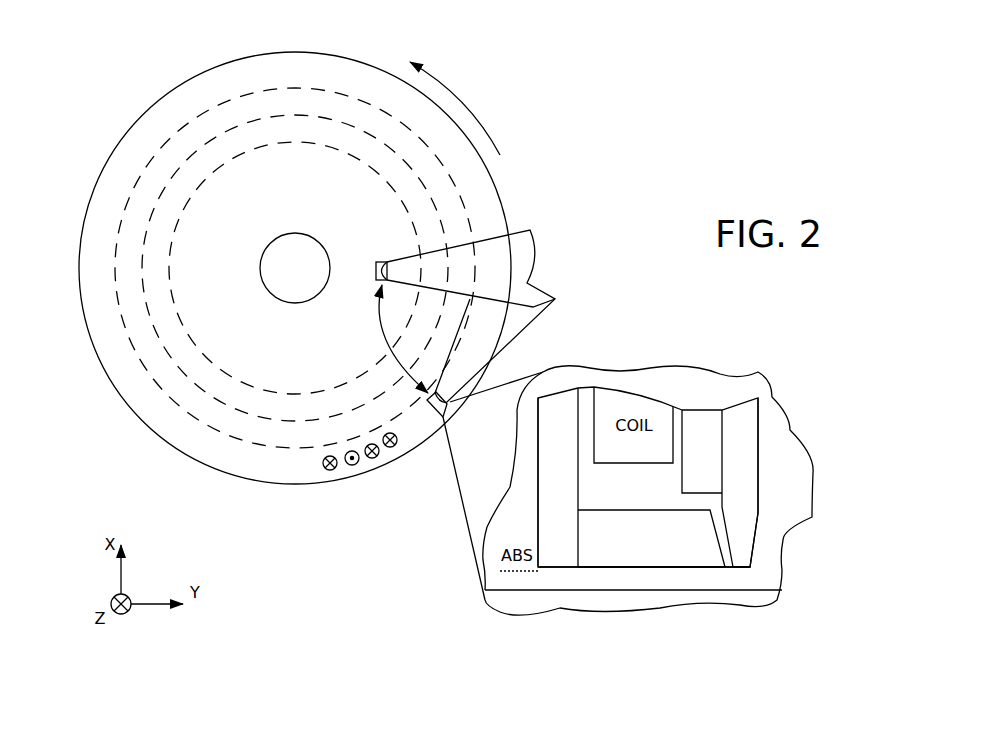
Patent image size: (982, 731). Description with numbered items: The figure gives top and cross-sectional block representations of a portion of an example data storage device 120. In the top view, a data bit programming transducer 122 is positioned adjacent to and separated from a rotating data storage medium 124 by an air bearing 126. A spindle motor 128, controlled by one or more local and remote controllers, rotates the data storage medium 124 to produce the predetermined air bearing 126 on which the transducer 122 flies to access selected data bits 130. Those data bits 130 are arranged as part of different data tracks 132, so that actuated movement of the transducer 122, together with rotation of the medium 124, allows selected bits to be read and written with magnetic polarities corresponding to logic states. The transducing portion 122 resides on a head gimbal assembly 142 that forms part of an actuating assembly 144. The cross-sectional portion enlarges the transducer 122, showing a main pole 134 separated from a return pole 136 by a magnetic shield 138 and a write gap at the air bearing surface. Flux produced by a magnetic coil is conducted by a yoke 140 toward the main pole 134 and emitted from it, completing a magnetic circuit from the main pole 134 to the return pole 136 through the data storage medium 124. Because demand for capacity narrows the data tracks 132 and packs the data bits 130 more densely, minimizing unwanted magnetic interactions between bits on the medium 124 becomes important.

The data storage device 120 is at (627, 75).
The data bit programming transducer 122 is at (700, 408).
The data storage medium 124 is at (124, 398).
The air bearing 126 is at (757, 578).
The spindle motor 128 is at (297, 233).
The data bits 130 is at (377, 465).
The data tracks 132 is at (178, 168).
The main pole 134 is at (728, 510).
The return pole 136 is at (546, 510).
The magnetic shield 138 is at (633, 550).
The yoke 140 is at (691, 465).
The head gimbal assembly 142 is at (382, 258).
The actuating assembly 144 is at (441, 280).